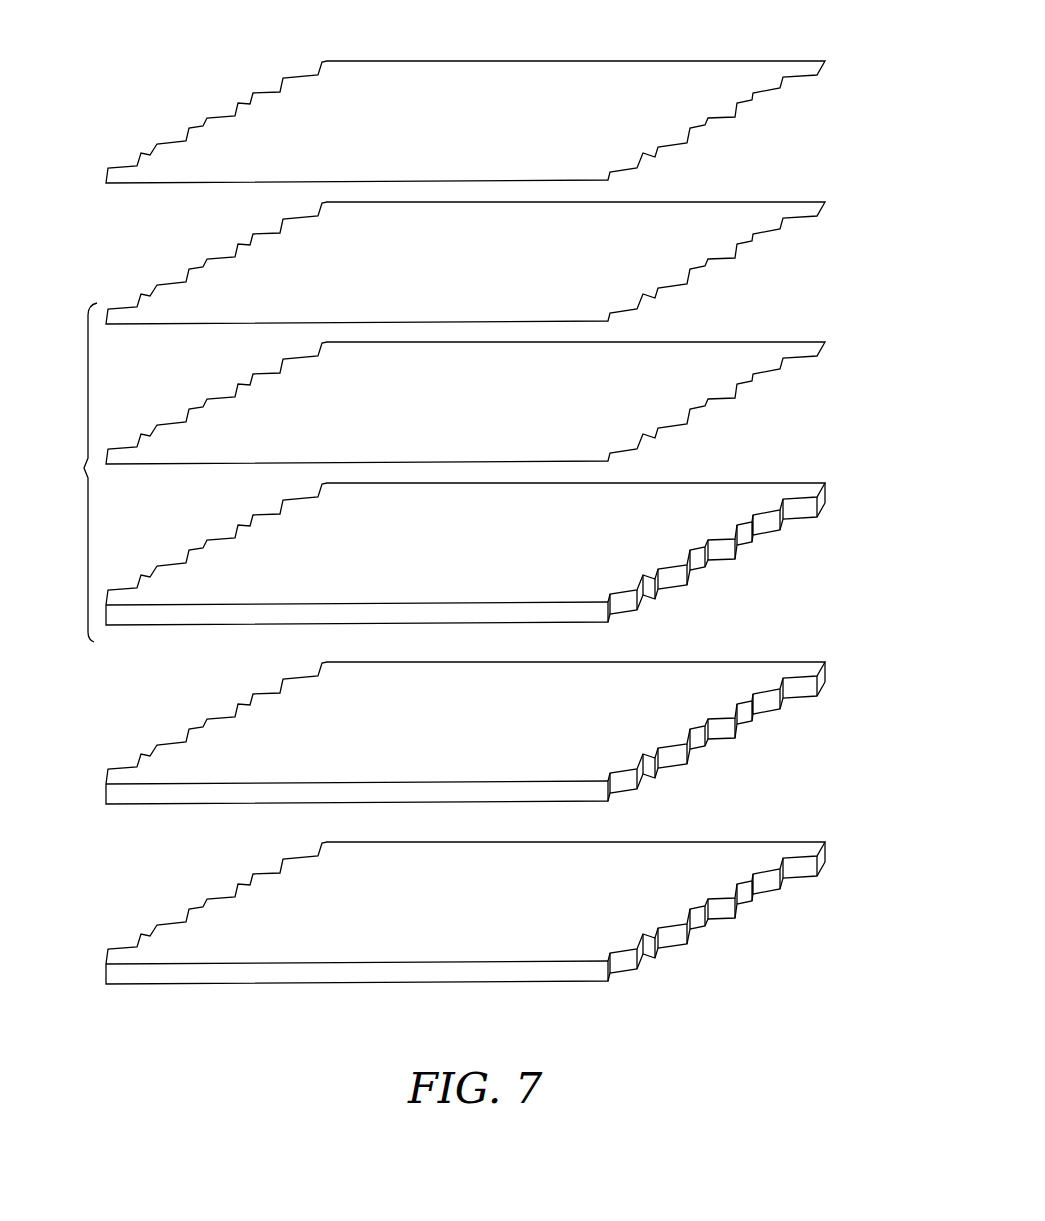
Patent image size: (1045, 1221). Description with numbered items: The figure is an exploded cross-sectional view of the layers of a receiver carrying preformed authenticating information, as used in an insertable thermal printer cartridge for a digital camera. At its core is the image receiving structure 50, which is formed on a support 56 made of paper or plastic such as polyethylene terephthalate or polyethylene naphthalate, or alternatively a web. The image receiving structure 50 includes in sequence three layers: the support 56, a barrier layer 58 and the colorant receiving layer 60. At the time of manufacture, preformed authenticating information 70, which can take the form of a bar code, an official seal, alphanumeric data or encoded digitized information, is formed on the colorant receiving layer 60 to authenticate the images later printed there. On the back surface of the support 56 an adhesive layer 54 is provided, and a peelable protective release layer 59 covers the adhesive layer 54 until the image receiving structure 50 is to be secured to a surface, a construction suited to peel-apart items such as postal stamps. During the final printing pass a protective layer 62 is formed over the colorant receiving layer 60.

The image receiving structure 50 is at (87, 468).
The adhesive layer 54 is at (760, 670).
The support 56 is at (768, 492).
The barrier layer 58 is at (765, 350).
The peelable protective release layer 59 is at (773, 847).
The colorant receiving layer 60 is at (803, 203).
The protective layer 62 is at (803, 62).
The preformed authenticating information 70 is at (722, 203).